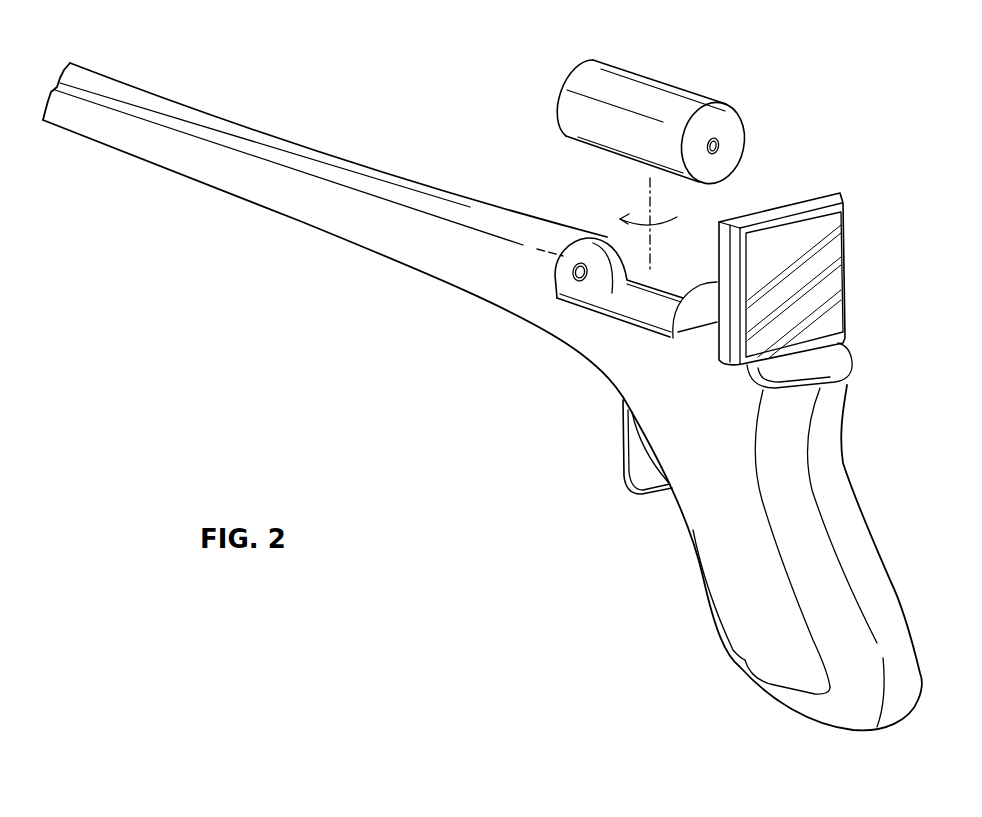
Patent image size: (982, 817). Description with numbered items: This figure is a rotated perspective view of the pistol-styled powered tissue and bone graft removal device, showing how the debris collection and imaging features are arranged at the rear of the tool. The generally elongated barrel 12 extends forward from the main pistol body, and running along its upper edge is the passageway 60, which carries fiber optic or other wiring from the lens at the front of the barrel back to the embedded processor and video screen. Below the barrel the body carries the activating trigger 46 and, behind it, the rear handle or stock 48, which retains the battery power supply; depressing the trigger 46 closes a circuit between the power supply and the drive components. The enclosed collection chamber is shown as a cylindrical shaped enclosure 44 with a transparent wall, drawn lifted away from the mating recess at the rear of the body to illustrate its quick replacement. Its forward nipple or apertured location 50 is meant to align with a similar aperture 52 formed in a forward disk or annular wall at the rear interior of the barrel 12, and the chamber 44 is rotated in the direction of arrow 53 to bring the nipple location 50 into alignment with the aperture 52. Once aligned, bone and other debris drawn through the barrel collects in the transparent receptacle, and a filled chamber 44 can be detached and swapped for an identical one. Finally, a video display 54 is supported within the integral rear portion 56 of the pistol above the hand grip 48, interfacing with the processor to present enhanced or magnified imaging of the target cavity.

The barrel 12 is at (222, 192).
The upper edge extending passageway 60 is at (150, 98).
The cylindrical shaped enclosure 44 is at (678, 103).
The nipple location 50 is at (720, 150).
The aperture 52 is at (598, 253).
The arrow 53 is at (677, 217).
The video display 54 is at (837, 298).
The integral rear portion 56 is at (817, 193).
The activating trigger 46 is at (632, 482).
The rear handle or stock 48 is at (712, 610).